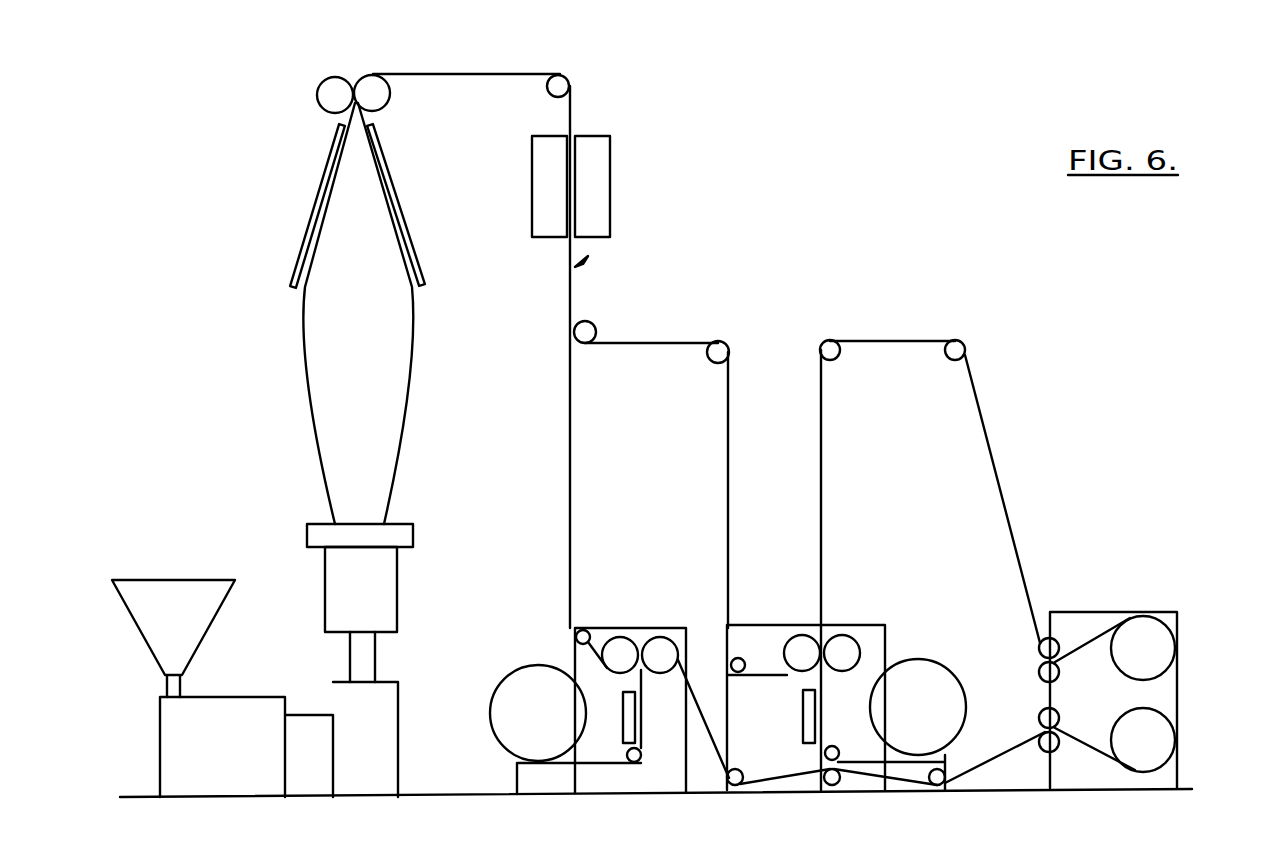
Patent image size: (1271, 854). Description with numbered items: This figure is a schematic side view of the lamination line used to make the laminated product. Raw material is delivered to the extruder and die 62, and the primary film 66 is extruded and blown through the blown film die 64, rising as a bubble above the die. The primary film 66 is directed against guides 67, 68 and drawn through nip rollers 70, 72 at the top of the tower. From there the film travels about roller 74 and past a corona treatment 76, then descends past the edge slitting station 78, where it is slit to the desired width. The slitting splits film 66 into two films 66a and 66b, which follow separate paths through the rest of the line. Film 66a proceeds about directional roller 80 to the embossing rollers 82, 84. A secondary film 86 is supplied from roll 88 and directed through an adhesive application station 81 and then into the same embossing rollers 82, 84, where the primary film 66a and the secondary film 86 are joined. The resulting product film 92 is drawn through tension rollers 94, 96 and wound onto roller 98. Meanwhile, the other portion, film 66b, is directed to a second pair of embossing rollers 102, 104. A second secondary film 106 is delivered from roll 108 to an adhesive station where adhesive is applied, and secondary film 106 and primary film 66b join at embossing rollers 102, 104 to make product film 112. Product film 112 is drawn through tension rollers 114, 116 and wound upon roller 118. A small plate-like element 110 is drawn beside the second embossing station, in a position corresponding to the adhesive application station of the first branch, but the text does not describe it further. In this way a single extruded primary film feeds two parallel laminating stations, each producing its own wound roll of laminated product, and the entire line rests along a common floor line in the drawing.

The extruder and die 62 is at (172, 596).
The blown film die 64 is at (390, 576).
The primary film 66 is at (322, 414).
The primary film portion 66a is at (571, 388).
The primary film portion 66b is at (648, 340).
The guide 67 is at (322, 177).
The guide 68 is at (392, 176).
The nip roller 70 is at (340, 82).
The nip roller 72 is at (373, 82).
The roller 74 is at (562, 78).
The corona treatment 76 is at (607, 172).
The edge slitting station 78 is at (585, 262).
The directional roller 80 is at (576, 637).
The adhesive application station 81 is at (622, 715).
The embossing roller 82 is at (626, 637).
The embossing roller 84 is at (664, 637).
The secondary film 86 is at (605, 765).
The roll 88 is at (508, 683).
The product film 92 is at (800, 775).
The tension roller 94 is at (1039, 720).
The tension roller 96 is at (1041, 749).
The roller 98 is at (1163, 730).
The embossing roller 102 is at (802, 642).
The embossing roller 104 is at (840, 640).
The secondary film 106 is at (862, 762).
The roll 108 is at (918, 685).
The slitter 110 is at (803, 706).
The product film 112 is at (975, 390).
The tension roller 114 is at (1058, 638).
The tension roller 116 is at (1039, 670).
The roller 118 is at (1165, 640).